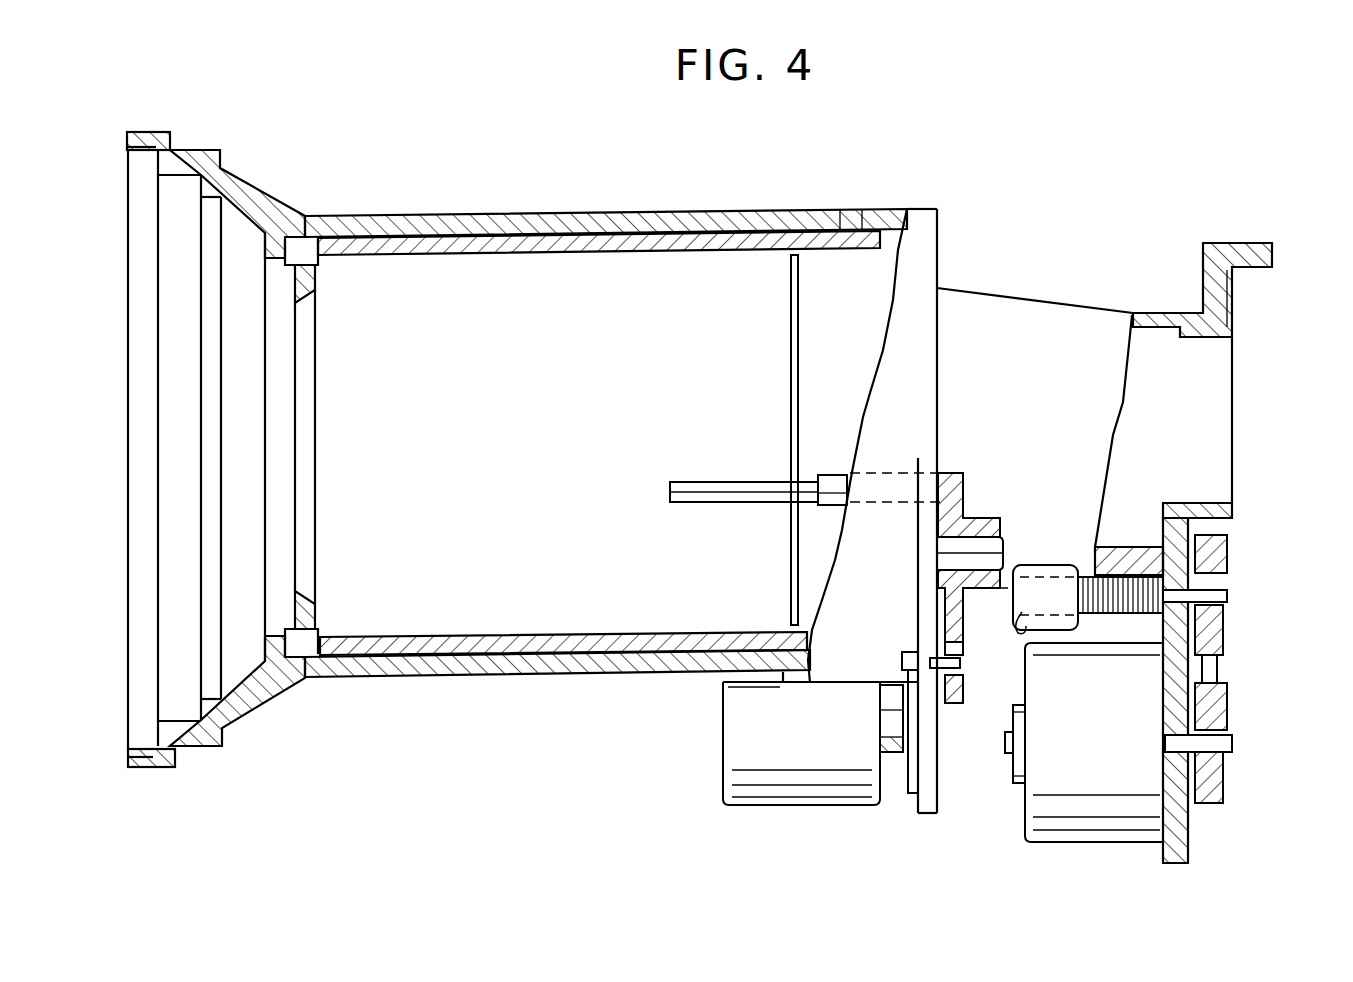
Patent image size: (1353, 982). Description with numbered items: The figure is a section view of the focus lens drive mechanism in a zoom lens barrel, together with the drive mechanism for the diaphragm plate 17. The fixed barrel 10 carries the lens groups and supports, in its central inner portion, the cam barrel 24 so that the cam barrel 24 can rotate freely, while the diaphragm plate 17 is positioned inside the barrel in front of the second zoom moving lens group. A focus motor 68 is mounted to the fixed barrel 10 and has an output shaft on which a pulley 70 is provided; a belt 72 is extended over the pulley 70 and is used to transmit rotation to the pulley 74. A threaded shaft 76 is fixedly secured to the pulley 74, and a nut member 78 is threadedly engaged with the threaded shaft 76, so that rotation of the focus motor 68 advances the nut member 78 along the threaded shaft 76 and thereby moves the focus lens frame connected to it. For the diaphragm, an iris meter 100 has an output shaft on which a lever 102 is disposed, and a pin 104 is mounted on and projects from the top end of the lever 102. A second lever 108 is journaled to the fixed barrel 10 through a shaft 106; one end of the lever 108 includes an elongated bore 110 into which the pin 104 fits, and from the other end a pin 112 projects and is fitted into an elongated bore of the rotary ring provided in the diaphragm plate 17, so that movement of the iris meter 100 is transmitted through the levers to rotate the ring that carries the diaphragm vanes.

The fixed barrel 10 is at (622, 214).
The cam barrel 24 is at (748, 236).
The diaphragm plate 17 is at (798, 298).
The pin 112 is at (725, 483).
The lever 108 is at (975, 495).
The shaft 106 is at (985, 540).
The nut member 78 is at (1036, 565).
The threaded shaft 76 is at (1130, 547).
The pulley 74 is at (1227, 550).
The belt 72 is at (1217, 672).
The pulley 70 is at (1225, 785).
The focus motor 68 is at (1106, 754).
The pin 104 is at (962, 664).
The elongated bore 110 is at (968, 678).
The lever 102 is at (900, 794).
The iris meter 100 is at (800, 790).